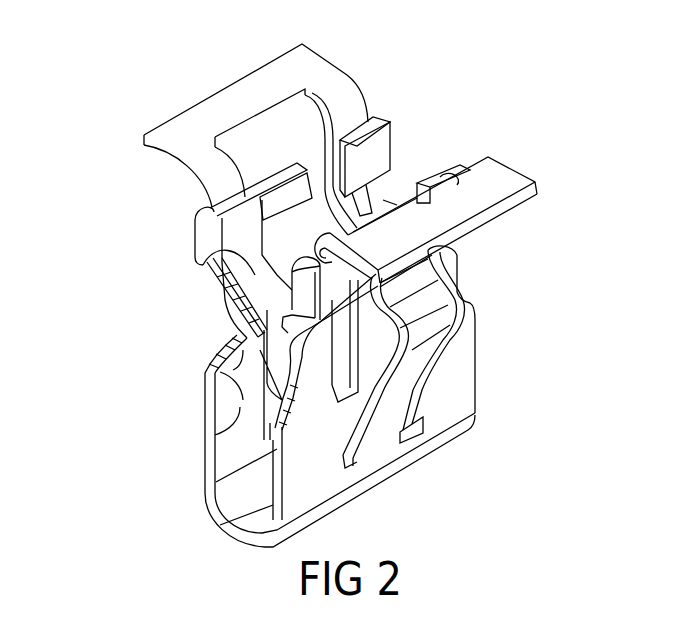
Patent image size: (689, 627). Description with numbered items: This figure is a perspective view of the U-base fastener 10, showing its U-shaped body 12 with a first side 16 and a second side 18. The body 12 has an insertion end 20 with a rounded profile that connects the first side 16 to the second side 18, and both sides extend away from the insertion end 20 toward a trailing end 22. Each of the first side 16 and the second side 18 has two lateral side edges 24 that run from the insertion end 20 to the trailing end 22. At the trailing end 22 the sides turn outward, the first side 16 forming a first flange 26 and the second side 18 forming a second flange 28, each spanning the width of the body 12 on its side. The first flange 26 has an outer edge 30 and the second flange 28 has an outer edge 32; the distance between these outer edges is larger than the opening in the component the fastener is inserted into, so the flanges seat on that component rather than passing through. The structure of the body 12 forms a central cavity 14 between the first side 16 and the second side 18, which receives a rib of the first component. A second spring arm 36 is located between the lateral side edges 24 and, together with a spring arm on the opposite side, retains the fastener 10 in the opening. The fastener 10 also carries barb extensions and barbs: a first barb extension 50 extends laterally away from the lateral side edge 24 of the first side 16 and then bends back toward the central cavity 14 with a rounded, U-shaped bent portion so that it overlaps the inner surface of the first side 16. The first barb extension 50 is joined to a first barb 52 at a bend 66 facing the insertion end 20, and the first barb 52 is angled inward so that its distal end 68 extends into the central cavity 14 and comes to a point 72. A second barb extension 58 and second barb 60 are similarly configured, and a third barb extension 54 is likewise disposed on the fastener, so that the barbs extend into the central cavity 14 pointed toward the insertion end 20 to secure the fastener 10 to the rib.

The fastener 10 is at (108, 184).
The body 12 is at (222, 436).
The central cavity 14 is at (442, 120).
The first side 16 is at (228, 372).
The second side 18 is at (458, 372).
The insertion end 20 is at (237, 537).
The trailing end 22 is at (345, 73).
The lateral side edges 24 is at (240, 323).
The first flange 26 is at (257, 72).
The second flange 28 is at (503, 173).
The outer edge of the first flange 30 is at (217, 93).
The outer edge of the second flange 32 is at (497, 207).
The second spring arm 36 is at (413, 378).
The first barb extension 50 is at (202, 237).
The first barb 52 is at (225, 270).
The third barb extension 54 is at (300, 292).
The second barb extension 58 is at (377, 145).
The second barb 60 is at (383, 203).
The bend 66 is at (215, 252).
The distal end 68 is at (213, 392).
The point 72 is at (232, 357).